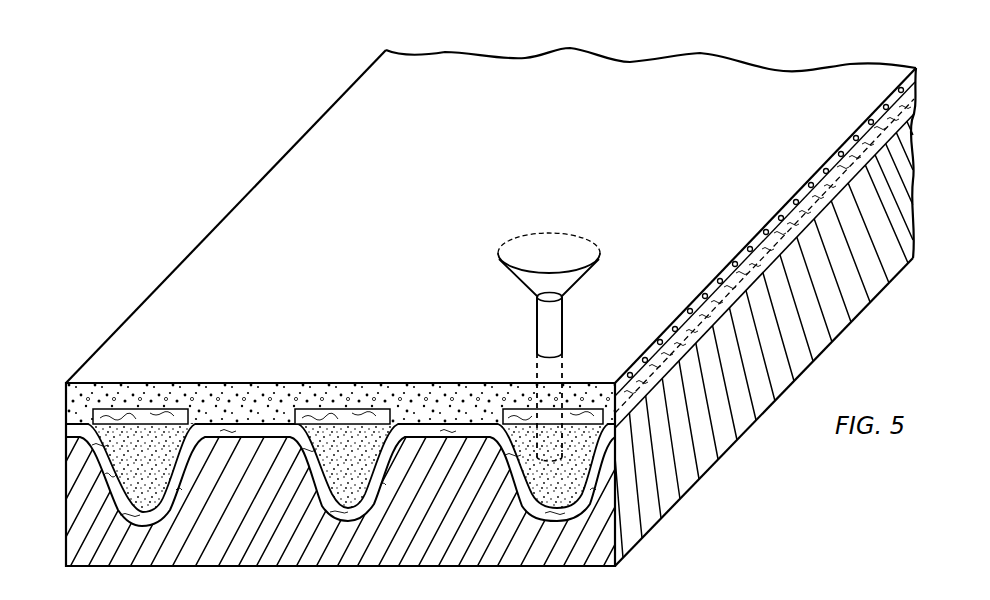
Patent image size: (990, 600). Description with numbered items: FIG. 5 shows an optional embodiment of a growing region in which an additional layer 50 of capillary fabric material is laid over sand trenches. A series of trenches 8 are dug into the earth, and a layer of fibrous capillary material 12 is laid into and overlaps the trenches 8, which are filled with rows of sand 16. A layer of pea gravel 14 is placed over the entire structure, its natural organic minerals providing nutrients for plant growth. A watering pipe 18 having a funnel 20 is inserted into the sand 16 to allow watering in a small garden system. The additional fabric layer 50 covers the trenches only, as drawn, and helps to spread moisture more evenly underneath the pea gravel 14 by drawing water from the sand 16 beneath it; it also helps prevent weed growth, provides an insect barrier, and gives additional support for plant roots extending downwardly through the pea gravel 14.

The trenches 8 is at (913, 212).
The fibrous capillary material 12 is at (915, 117).
The pea gravel 14 is at (918, 80).
The sand 16 is at (575, 440).
The watering pipe 18 is at (533, 326).
The funnel 20 is at (502, 262).
The additional layer of capillary fabric material 50 is at (145, 408).